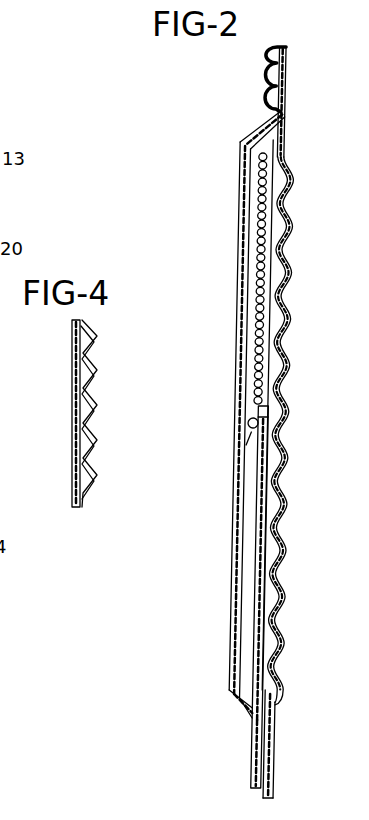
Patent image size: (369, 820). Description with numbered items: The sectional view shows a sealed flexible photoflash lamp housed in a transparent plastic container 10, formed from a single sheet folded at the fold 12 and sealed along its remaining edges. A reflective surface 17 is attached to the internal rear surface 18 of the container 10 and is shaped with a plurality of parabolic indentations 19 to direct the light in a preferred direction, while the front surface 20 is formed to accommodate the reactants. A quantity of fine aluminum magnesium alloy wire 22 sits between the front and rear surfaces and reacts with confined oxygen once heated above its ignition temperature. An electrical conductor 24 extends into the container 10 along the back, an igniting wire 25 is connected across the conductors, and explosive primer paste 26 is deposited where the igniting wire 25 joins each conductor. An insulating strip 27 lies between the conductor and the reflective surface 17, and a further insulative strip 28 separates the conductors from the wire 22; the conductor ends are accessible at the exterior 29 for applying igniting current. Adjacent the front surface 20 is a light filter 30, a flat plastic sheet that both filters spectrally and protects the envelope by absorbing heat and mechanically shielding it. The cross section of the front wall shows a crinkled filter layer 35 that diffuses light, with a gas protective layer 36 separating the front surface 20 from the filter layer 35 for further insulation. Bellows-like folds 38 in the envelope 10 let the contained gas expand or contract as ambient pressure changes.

In FIG. 2, the container 10 is at (220, 133).
In FIG. 2, the fold 12 is at (278, 46).
In FIG. 2, the reflective surface 17 is at (290, 343).
In FIG. 2, the internal rear surface 18 is at (285, 417).
In FIG. 2, the parabolic indentations 19 is at (293, 185).
In FIG. 2, the front surface 20 is at (236, 300).
In FIG. 4, the front surface 20 is at (74, 383).
In FIG. 2, the aluminum magnesium alloy wire 22 is at (258, 230).
In FIG. 2, the electrical conductor 24 is at (268, 612).
In FIG. 2, the igniting wire 25 is at (252, 413).
In FIG. 2, the explosive primer paste 26 is at (253, 432).
In FIG. 2, the insulating strip 27 is at (287, 650).
In FIG. 2, the insulative strip 28 is at (260, 617).
In FIG. 2, the conductor exterior ends 29 is at (250, 757).
In FIG. 2, the light filter 30 is at (235, 530).
In FIG. 4, the filter layer 35 is at (93, 385).
In FIG. 4, the gas protective layer 36 is at (92, 444).
In FIG. 2, the folds 38 is at (265, 102).